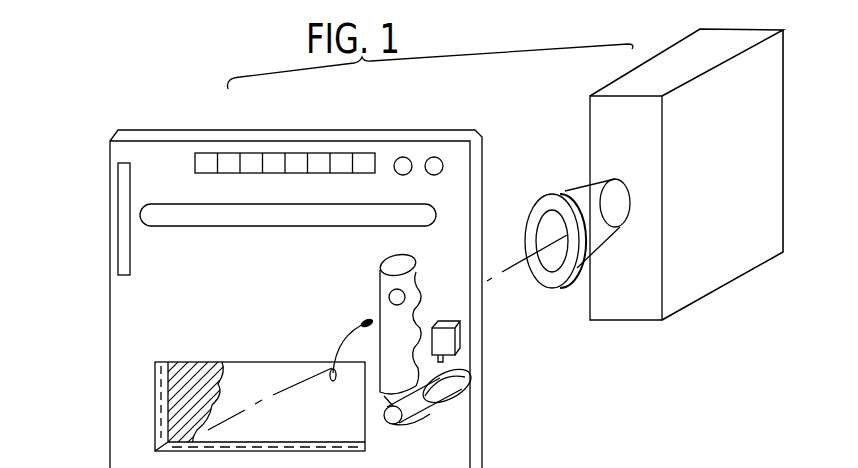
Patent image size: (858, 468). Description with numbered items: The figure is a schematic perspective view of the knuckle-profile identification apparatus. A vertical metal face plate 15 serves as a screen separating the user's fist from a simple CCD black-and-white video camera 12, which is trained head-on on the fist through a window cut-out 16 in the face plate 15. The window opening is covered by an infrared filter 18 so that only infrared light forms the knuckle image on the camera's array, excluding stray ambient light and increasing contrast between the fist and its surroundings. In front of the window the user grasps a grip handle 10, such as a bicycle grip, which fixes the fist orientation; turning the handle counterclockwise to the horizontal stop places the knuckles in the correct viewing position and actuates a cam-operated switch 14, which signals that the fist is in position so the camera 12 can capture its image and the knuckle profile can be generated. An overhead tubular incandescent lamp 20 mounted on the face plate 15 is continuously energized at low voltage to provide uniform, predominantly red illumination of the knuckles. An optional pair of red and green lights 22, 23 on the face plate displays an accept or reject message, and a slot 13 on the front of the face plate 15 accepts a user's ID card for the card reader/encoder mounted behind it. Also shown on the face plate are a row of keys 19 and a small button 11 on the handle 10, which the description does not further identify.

The grip handle 10 is at (380, 283).
The push button 11 is at (390, 299).
The video camera 12 is at (750, 143).
The slot 13 is at (118, 193).
The switch 14 is at (448, 338).
The face plate 15 is at (128, 316).
The window cut-out 16 is at (261, 362).
The infrared filter 18 is at (207, 368).
The keypad 19 is at (277, 153).
The tubular incandescent lamp 20 is at (262, 218).
The red light 22 is at (402, 157).
The green light 23 is at (434, 157).